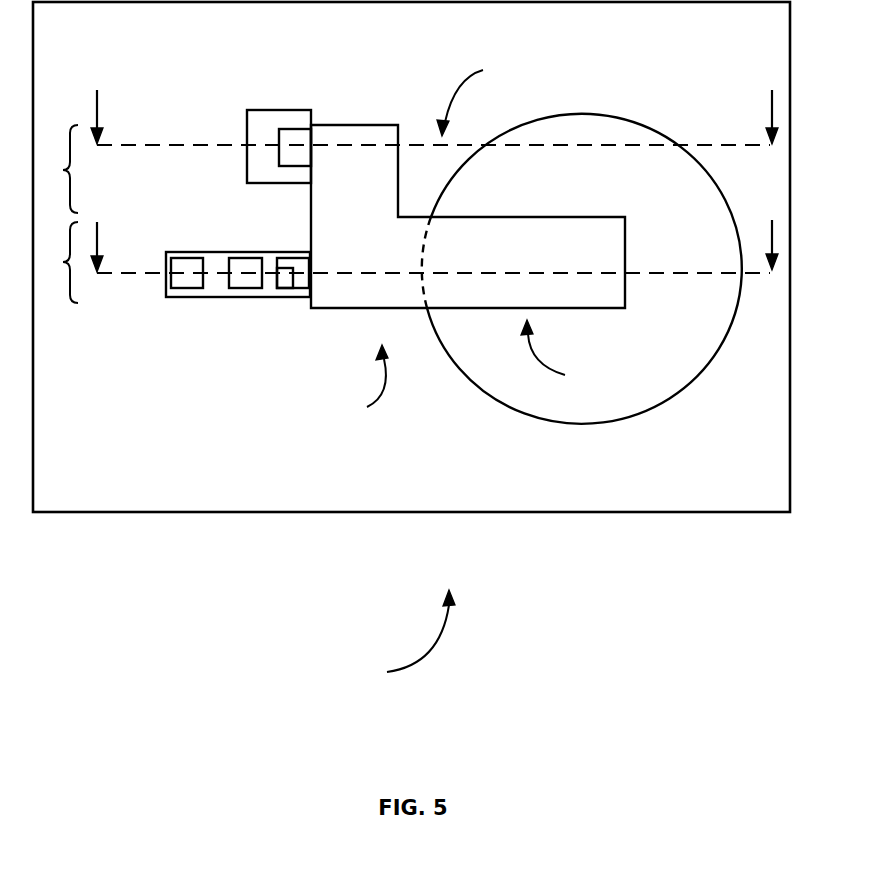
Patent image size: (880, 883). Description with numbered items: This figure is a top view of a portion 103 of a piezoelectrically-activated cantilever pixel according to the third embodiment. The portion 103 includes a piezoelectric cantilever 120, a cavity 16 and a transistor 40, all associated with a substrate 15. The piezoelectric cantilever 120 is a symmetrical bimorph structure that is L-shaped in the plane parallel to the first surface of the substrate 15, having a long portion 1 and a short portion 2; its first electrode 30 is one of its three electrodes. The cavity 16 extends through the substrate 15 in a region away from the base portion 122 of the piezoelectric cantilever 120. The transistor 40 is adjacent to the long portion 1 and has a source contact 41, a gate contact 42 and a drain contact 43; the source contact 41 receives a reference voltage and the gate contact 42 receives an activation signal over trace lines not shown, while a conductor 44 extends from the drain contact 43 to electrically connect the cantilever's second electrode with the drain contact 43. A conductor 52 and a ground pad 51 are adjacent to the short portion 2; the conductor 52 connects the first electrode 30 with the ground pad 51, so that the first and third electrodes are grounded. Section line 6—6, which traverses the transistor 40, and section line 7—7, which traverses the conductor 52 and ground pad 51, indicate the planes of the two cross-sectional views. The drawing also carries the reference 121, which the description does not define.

The substrate 15 is at (563, 490).
The cavity 16 is at (658, 375).
The first electrode 30 is at (385, 287).
The transistor 40 is at (222, 287).
The source contact 41 is at (170, 265).
The gate contact 42 is at (243, 265).
The drain contact 43 is at (284, 280).
The conductor 44 is at (302, 265).
The ground pad 51 is at (257, 128).
The conductor 52 is at (293, 137).
The portion of a piezoelectrically-activated cantilever pixel 103 is at (399, 639).
The piezoelectric cantilever 120 is at (487, 97).
The direction arrow 121 is at (568, 352).
The base portion 122 is at (357, 385).
The section line 7— 7 is at (434, 100).
The section line 6— 6 is at (434, 230).
The short portion 2 is at (60, 169).
The long portion 1 is at (62, 262).